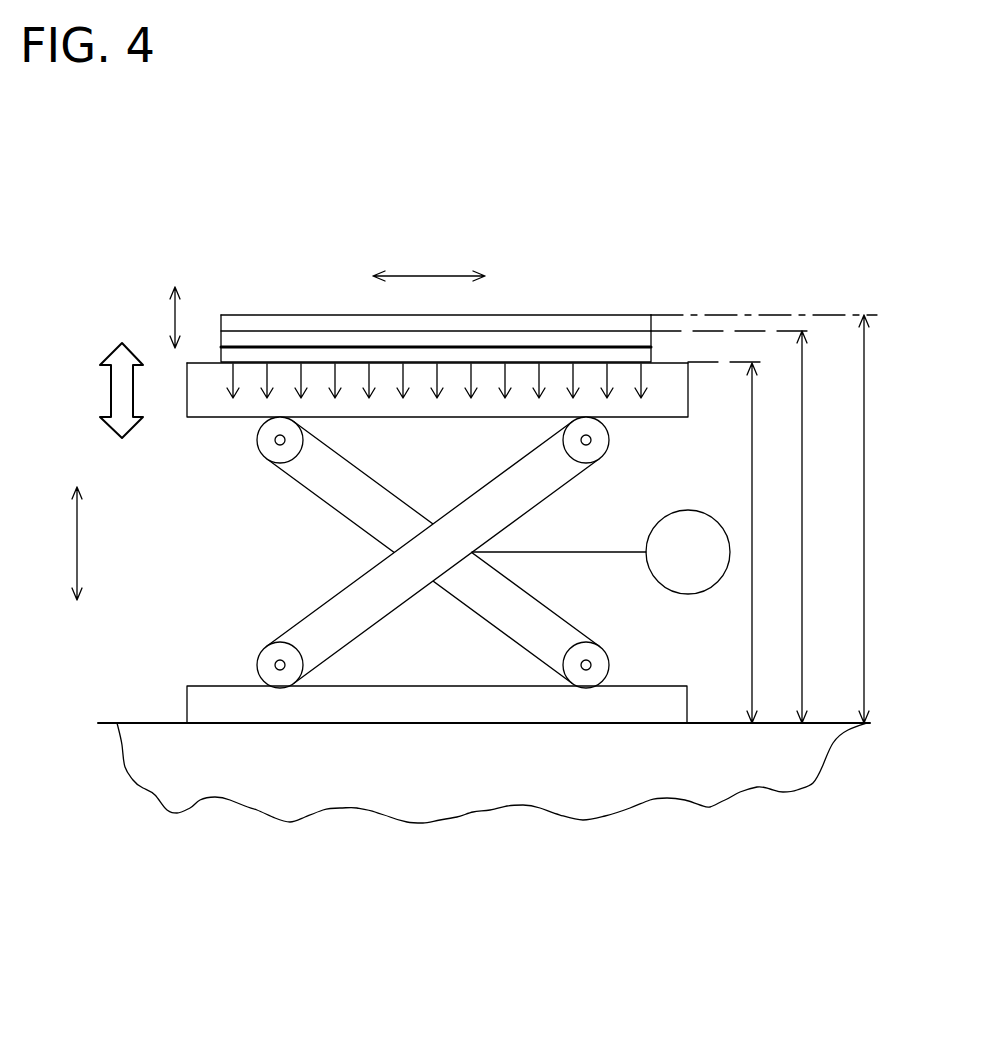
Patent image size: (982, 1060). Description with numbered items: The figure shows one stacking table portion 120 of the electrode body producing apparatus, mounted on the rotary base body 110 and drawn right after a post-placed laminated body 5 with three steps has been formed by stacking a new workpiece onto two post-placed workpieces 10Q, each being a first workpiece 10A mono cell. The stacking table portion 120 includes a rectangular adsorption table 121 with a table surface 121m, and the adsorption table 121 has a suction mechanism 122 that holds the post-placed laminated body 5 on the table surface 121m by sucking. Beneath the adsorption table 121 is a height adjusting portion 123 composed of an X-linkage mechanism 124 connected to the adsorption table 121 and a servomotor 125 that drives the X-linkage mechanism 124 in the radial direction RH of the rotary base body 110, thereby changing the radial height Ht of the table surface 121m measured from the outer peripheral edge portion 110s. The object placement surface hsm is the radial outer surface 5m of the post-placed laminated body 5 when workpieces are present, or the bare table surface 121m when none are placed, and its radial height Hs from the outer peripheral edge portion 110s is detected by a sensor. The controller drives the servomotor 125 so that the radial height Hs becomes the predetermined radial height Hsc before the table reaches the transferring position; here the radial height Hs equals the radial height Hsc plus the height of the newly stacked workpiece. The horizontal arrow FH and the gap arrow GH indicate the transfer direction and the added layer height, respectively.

The post-placed laminated body 5 is at (500, 338).
The radial outer surface of the post-placed laminated body 5m is at (552, 315).
The object placement surface hsm is at (578, 315).
The post-placed workpiece 10Q is at (764, 311).
The first workpiece 10A is at (651, 355).
The stacking table portion 120 is at (597, 383).
The adsorption table 121 is at (437, 301).
The suction mechanism 122 is at (351, 378).
The table surface 121m is at (279, 362).
The height adjusting portion 123 is at (317, 500).
The X-linkage mechanism 124 is at (317, 607).
The servomotor 125 is at (697, 593).
The outer peripheral edge portion of the rotary base body 110s is at (484, 818).
The rotary base body 110 is at (443, 757).
The horizontal movement direction FH is at (429, 262).
The gap height GH is at (156, 317).
The radial direction RH is at (59, 543).
The radial height of the table surface Ht is at (765, 543).
The predetermined radial height Hsc is at (825, 527).
The radial height of the object placement surface Hs is at (881, 519).